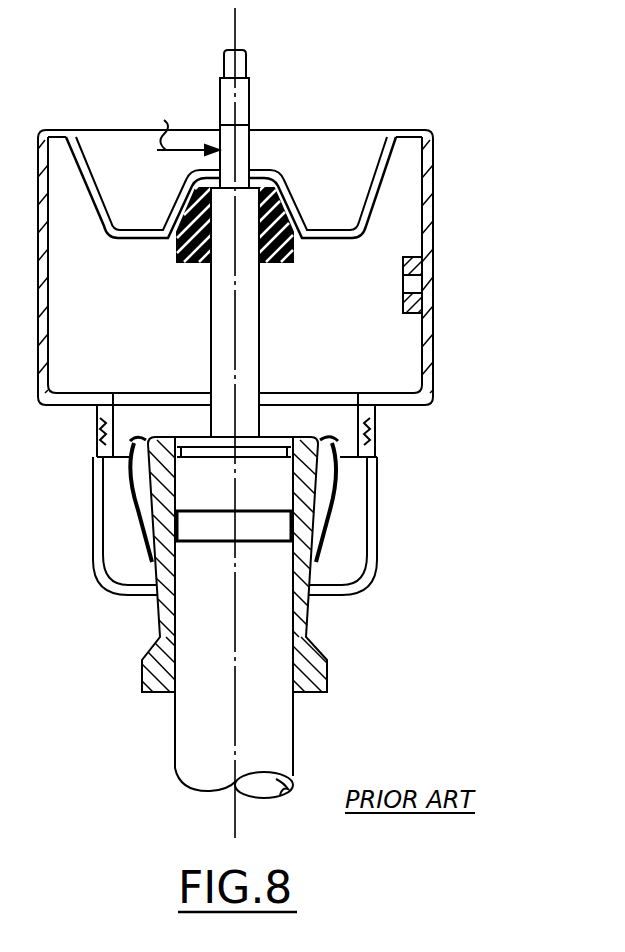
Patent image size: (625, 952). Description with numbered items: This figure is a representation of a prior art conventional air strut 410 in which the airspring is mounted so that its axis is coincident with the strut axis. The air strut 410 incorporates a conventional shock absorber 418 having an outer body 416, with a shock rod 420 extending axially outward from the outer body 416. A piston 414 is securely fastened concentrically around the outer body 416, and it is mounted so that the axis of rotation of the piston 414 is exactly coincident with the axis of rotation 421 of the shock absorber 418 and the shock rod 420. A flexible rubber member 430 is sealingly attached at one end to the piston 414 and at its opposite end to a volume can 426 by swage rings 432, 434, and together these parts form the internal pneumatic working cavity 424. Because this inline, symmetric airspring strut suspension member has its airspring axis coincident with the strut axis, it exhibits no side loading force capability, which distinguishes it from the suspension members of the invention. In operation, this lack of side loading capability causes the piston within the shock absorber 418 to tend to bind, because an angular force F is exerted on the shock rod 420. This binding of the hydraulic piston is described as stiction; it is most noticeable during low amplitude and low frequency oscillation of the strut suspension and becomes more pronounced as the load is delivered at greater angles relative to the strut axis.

The air strut 410 is at (460, 112).
The piston 414 is at (304, 570).
The outer body 416 is at (292, 797).
The shock absorber 418 is at (174, 718).
The shock rod 420 is at (250, 328).
The axis of rotation 421 is at (236, 25).
The internal pneumatic working cavity 424 is at (408, 338).
The volume can 426 is at (427, 190).
The flexible rubber member 430 is at (375, 497).
The swage ring 432 is at (380, 430).
The swage ring 434 is at (120, 467).